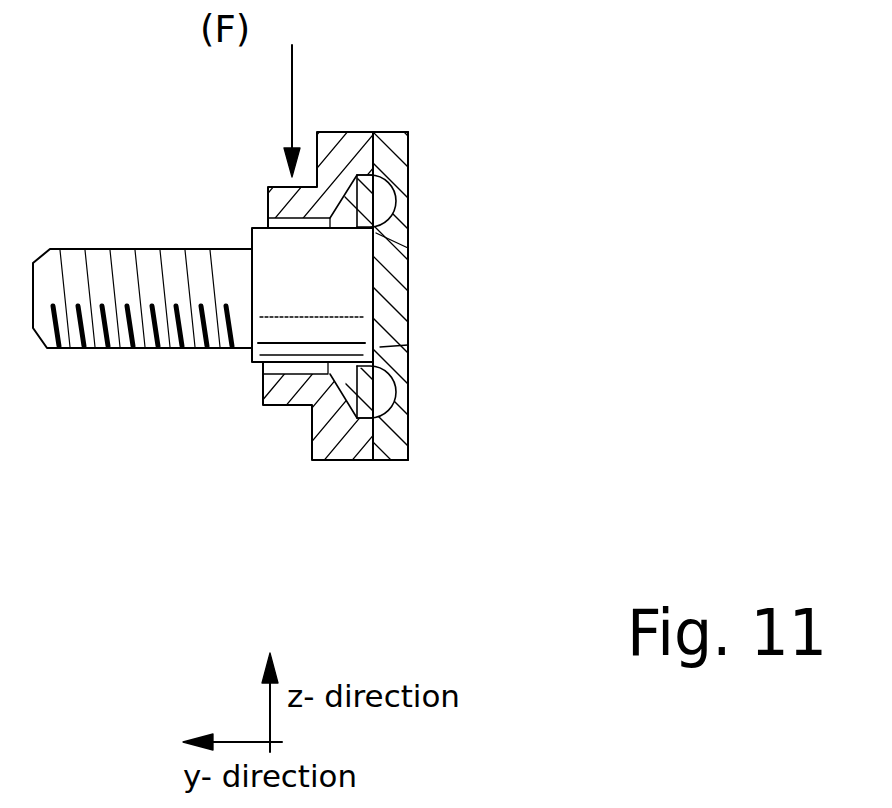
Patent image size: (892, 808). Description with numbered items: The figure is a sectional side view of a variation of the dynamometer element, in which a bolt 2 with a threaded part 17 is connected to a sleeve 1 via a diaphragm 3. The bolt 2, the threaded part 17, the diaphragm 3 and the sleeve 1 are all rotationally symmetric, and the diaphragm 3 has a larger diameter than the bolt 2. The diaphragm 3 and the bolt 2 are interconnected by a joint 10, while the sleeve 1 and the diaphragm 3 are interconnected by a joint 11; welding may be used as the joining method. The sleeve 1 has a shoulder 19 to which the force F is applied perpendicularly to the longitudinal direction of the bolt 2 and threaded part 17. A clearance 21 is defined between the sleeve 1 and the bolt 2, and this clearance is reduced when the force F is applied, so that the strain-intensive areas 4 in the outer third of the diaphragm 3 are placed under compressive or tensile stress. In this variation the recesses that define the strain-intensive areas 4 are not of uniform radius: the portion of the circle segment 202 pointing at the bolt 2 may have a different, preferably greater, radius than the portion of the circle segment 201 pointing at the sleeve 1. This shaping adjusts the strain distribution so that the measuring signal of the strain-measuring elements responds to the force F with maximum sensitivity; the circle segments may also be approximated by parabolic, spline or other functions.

The sleeve 1 is at (342, 132).
The bolt 2 is at (325, 287).
The diaphragm 3 is at (397, 318).
The strain-intensive areas 4 is at (468, 308).
The joint 10 is at (408, 248).
The joint 11 is at (373, 132).
The threaded part 17 is at (100, 346).
The shoulder 19 is at (284, 405).
The clearance 21 is at (287, 225).
The circle segment 201 is at (381, 177).
The circle segment 202 is at (383, 221).